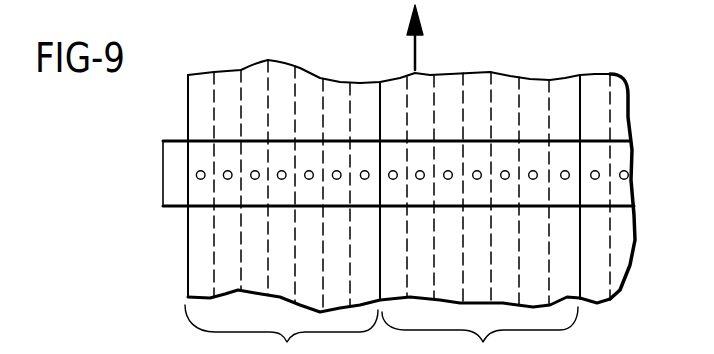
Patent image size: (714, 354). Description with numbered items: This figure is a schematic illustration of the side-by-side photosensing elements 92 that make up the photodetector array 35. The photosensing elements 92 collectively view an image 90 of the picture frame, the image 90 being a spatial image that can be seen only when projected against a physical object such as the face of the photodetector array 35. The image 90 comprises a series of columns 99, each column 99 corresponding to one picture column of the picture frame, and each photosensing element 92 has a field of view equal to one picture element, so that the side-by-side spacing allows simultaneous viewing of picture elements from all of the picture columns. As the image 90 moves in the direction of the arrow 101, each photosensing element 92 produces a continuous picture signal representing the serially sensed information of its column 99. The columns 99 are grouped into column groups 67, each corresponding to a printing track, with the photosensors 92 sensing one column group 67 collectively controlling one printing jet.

The photodetector array 35 is at (163, 173).
The column group 67 is at (289, 342).
The image 90 is at (188, 262).
The photosensing element 92 is at (505, 171).
The column 99 is at (338, 82).
The arrow 101 is at (418, 50).